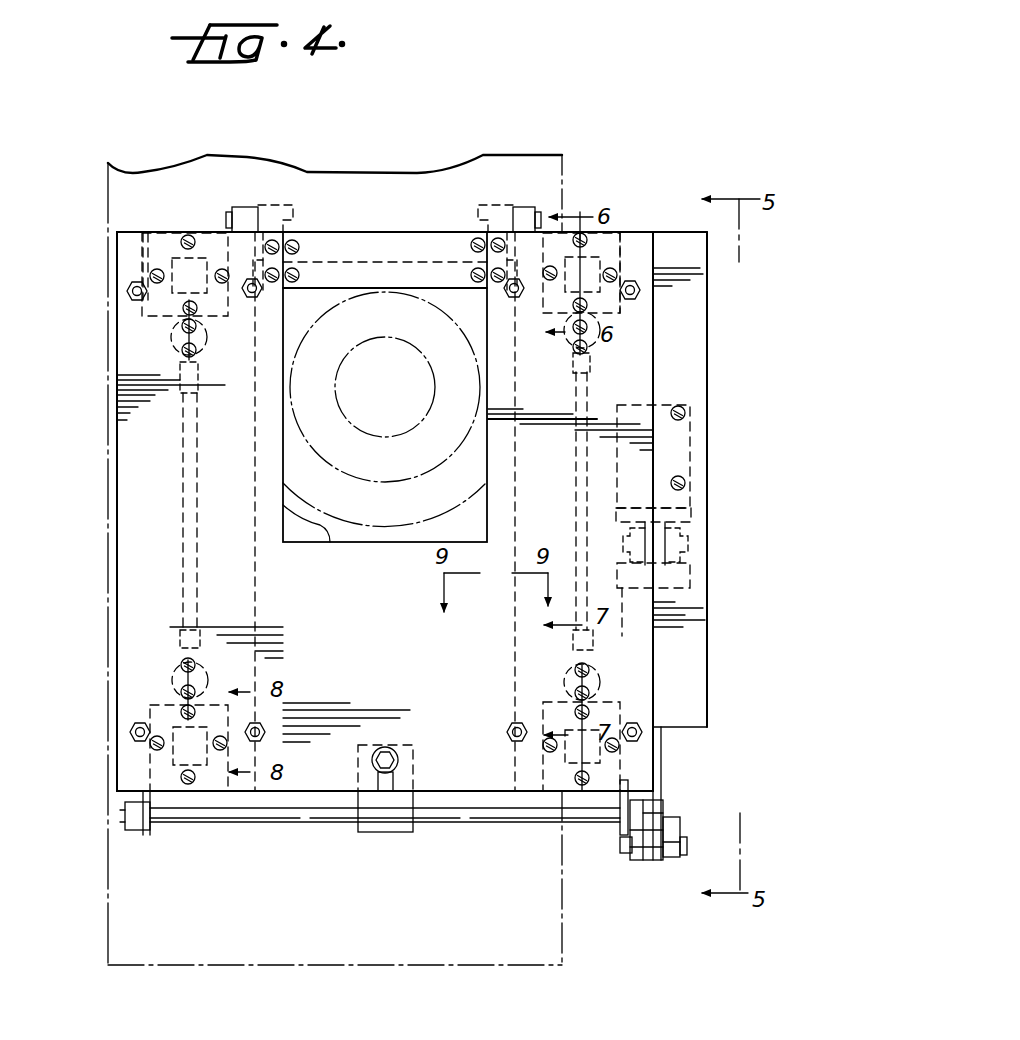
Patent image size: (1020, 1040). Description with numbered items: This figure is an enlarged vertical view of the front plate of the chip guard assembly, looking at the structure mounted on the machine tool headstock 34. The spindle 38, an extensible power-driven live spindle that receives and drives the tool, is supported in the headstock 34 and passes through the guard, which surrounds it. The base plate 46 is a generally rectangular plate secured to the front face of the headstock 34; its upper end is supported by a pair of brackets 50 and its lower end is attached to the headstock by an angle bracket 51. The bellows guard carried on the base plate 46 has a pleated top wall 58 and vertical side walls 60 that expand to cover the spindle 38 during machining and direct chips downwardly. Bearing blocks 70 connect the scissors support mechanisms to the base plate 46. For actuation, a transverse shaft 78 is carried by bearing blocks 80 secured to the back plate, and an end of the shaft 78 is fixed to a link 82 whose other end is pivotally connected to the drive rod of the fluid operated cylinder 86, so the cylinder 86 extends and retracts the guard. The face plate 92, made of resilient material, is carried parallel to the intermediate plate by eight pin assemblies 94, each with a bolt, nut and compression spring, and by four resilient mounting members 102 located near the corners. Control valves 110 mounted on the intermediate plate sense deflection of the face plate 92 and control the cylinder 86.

The headstock 34 is at (332, 953).
The spindle 38 is at (382, 400).
The base plate 46 is at (700, 462).
The brackets 50 is at (243, 207).
The angle bracket 51 is at (380, 833).
The pleated top wall 58 is at (333, 268).
The vertical side walls 60 is at (255, 513).
The bearing blocks 70 is at (143, 250).
The transverse shaft 78 is at (280, 810).
The bearing blocks 80 is at (145, 835).
The link 82 is at (677, 823).
The fluid operated cylinder 86 is at (680, 595).
The face plate 92 is at (130, 577).
The pin assemblies 94 is at (127, 292).
The resilient mounting members 102 is at (200, 233).
The control valves 110 is at (173, 332).